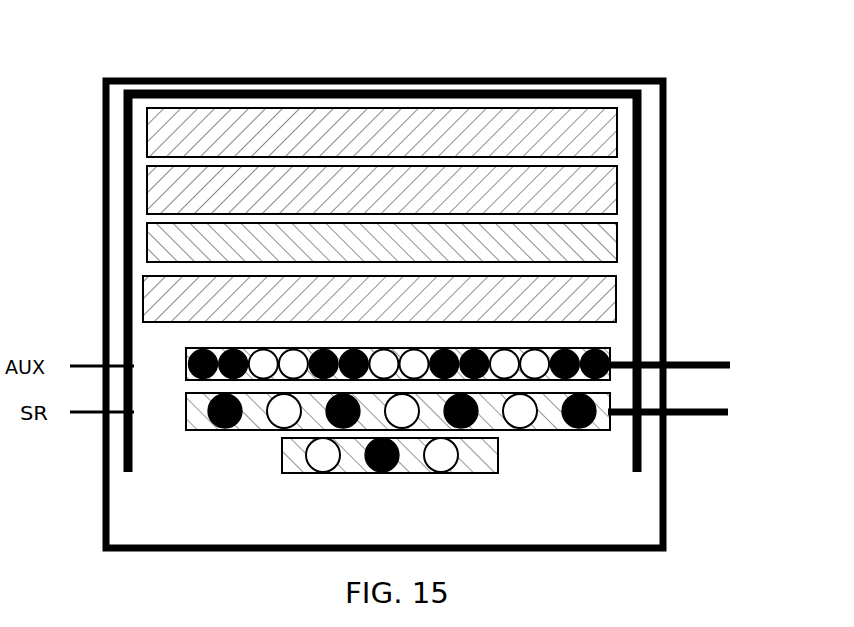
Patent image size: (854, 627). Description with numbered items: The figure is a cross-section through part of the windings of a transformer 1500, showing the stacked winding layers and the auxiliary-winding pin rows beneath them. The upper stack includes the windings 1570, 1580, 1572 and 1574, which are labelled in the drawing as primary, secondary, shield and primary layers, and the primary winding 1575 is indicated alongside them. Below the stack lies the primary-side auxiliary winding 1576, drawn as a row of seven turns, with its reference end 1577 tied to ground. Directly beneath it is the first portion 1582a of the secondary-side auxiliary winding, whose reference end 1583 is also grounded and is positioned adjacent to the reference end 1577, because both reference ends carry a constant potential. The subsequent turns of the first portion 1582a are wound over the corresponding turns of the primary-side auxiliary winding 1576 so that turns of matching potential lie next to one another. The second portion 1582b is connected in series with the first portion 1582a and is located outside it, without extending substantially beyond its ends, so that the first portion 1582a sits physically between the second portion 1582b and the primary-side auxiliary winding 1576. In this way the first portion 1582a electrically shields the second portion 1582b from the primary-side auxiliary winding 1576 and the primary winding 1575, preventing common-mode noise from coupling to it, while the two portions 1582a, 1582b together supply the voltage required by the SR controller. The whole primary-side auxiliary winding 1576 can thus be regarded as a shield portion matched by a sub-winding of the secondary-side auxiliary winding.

The transformer assembly 1500 is at (206, 64).
The primary winding 1570 is at (610, 129).
The secondary winding 1580 is at (604, 192).
The shield 1572 is at (605, 240).
The primary winding 1574 is at (612, 297).
The primary winding 1575 is at (158, 132).
The primary-side auxiliary winding 1576 is at (235, 347).
The reference end of the primary-side auxiliary winding 1577 is at (612, 376).
The first portion of the secondary-side auxiliary winding 1582a is at (522, 430).
The second portion of the secondary-side auxiliary winding 1582b is at (445, 473).
The reference end of the secondary-side auxiliary winding 1583 is at (602, 430).